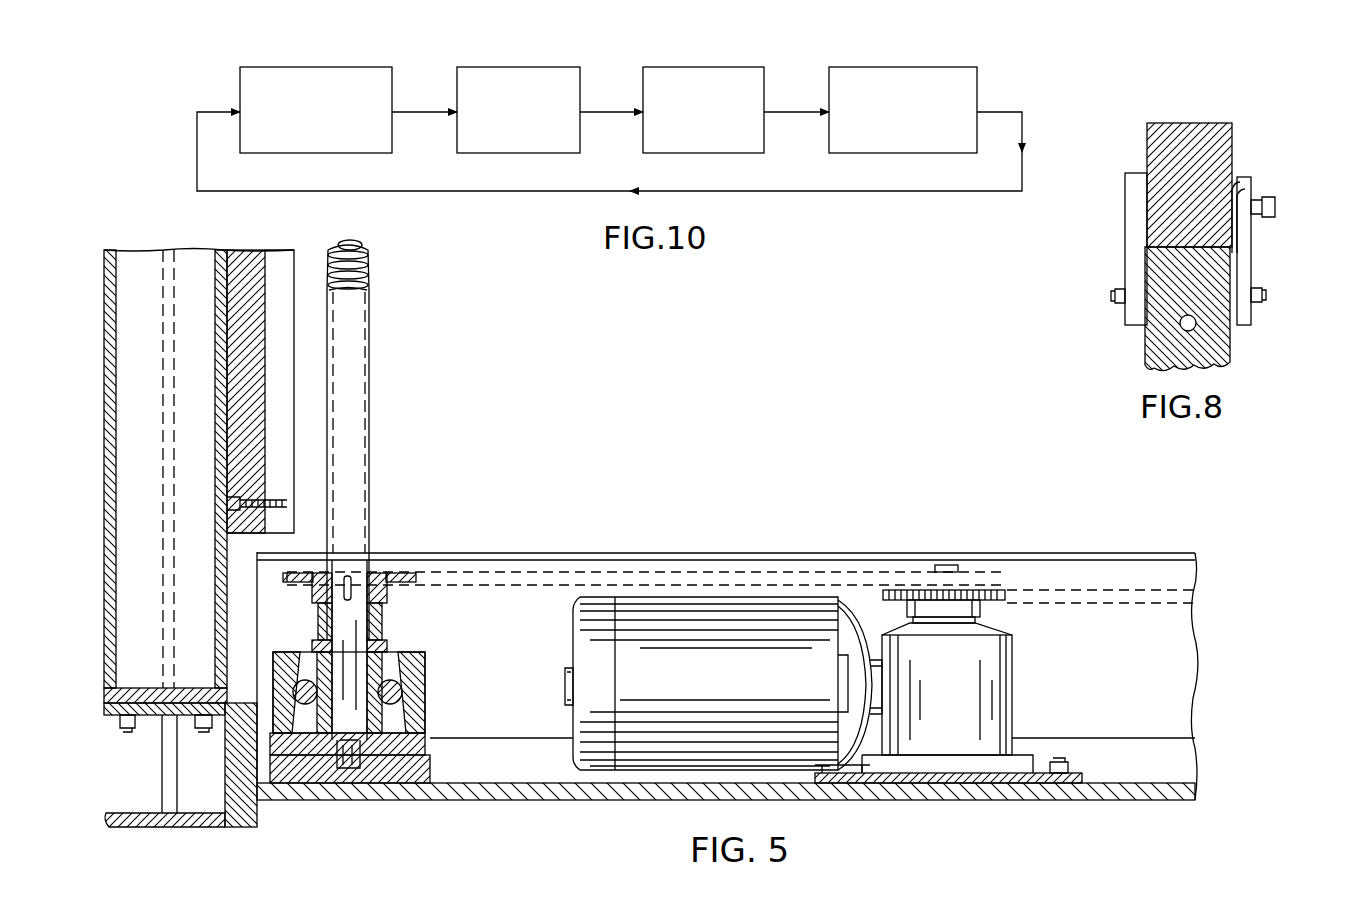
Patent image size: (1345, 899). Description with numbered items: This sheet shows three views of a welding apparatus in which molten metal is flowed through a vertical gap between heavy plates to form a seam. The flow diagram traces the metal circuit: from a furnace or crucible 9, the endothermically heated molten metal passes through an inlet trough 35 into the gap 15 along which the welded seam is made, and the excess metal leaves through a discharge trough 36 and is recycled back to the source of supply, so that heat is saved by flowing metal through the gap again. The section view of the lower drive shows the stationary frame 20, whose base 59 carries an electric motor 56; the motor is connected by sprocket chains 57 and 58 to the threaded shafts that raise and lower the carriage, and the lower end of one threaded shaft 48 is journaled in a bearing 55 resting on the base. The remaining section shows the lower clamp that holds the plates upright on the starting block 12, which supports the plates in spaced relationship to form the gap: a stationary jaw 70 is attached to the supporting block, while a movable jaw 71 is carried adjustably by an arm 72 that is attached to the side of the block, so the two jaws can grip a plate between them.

In FIG. 10, the furnace or crucible 9 is at (318, 67).
In FIG. 10, the inlet trough 35 is at (520, 67).
In FIG. 10, the gap 15 is at (705, 67).
In FIG. 10, the discharge trough 36 is at (905, 67).
In FIG. 8, the stationary jaw 70 is at (1135, 228).
In FIG. 8, the movable jaw 71 is at (1234, 192).
In FIG. 8, the arm 72 is at (1244, 270).
In FIG. 8, the starting block 12 is at (1218, 352).
In FIG. 5, the stationary frame 20 is at (110, 513).
In FIG. 5, the threaded shaft 48 is at (357, 443).
In FIG. 5, the bearing 55 is at (407, 673).
In FIG. 5, the electric motor 56 is at (570, 687).
In FIG. 5, the sprocket chain 57 is at (512, 585).
In FIG. 5, the sprocket chain 58 is at (1090, 603).
In FIG. 5, the base 59 is at (562, 800).